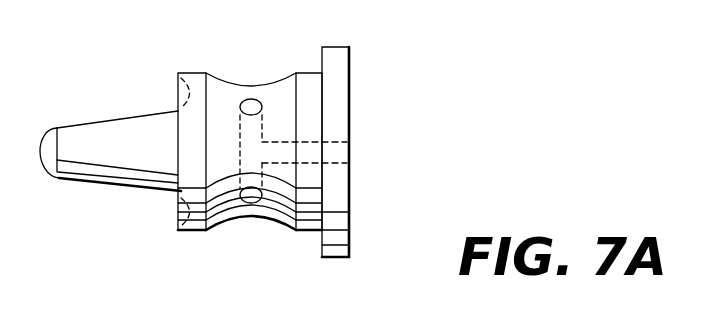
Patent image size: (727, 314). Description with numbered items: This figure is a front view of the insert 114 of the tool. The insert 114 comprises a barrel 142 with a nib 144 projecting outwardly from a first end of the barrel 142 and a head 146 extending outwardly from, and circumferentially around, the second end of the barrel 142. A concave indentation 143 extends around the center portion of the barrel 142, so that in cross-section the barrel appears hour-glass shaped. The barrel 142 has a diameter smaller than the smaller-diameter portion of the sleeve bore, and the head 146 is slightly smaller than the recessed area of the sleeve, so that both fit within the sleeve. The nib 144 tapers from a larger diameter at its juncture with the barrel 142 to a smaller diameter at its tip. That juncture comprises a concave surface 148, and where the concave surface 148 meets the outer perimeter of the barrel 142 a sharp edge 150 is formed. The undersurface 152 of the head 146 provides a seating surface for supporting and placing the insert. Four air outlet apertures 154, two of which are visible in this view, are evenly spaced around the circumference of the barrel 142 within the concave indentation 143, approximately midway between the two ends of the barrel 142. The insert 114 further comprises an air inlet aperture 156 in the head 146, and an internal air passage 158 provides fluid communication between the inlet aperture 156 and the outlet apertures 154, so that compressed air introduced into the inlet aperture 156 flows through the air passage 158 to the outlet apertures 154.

The insert 114 is at (303, 73).
The barrel 142 is at (220, 212).
The concave indentation 143 is at (280, 80).
The nib 144 is at (100, 135).
The head 146 is at (335, 63).
The concave surface 148 is at (175, 92).
The sharp edge 150 is at (180, 230).
The undersurface 152 is at (322, 247).
The air outlet apertures 154 is at (252, 110).
The air inlet aperture 156 is at (342, 152).
The internal air passage 158 is at (280, 153).